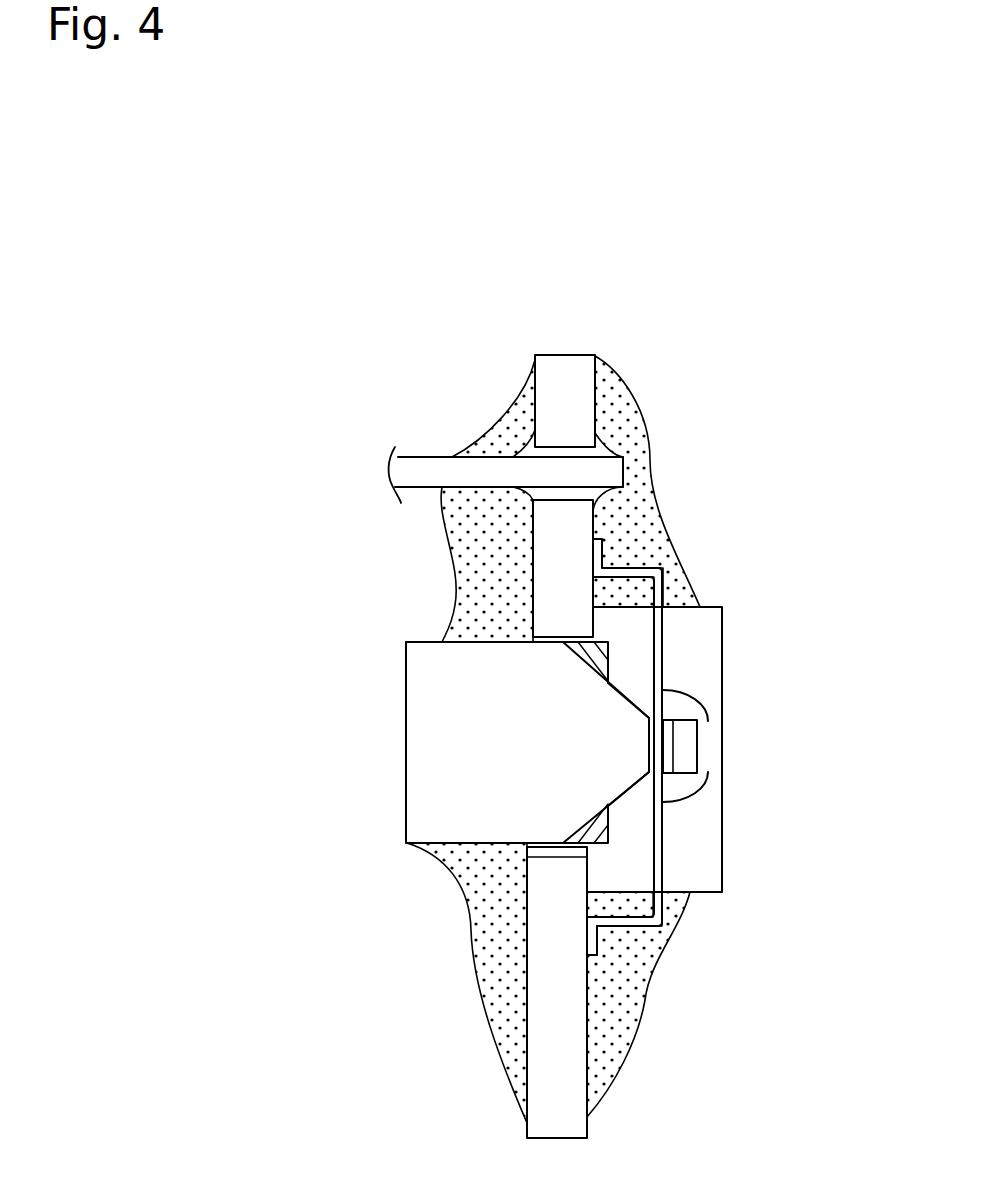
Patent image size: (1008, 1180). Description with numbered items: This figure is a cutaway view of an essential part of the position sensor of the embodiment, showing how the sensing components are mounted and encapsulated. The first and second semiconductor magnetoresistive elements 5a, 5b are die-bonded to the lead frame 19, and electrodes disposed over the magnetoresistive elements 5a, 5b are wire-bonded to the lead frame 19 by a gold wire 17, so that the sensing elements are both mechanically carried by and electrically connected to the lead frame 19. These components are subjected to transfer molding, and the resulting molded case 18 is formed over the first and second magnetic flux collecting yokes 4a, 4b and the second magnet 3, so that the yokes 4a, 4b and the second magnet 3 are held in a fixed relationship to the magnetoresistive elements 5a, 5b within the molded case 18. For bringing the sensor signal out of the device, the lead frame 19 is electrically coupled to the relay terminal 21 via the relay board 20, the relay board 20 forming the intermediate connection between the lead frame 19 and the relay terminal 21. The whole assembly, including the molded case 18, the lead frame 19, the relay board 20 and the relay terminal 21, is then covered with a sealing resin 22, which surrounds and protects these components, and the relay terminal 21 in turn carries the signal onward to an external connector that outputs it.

The second magnet 3 is at (607, 847).
The first magnetic flux collecting yoke 4a is at (454, 742).
The second magnetic flux collecting yoke 4b is at (430, 693).
The first semiconductor magnetoresistive element 5a is at (763, 790).
The second semiconductor magnetoresistive element 5b is at (688, 747).
The gold wire 17 is at (705, 707).
The molded case 18 is at (708, 657).
The lead frame 19 is at (663, 590).
The relay board 20 is at (565, 365).
The relay terminal 21 is at (610, 477).
The sealing resin 22 is at (490, 938).